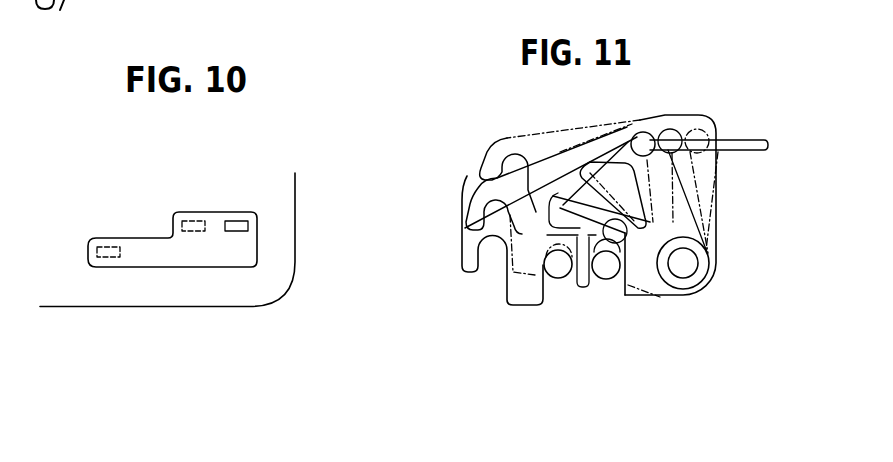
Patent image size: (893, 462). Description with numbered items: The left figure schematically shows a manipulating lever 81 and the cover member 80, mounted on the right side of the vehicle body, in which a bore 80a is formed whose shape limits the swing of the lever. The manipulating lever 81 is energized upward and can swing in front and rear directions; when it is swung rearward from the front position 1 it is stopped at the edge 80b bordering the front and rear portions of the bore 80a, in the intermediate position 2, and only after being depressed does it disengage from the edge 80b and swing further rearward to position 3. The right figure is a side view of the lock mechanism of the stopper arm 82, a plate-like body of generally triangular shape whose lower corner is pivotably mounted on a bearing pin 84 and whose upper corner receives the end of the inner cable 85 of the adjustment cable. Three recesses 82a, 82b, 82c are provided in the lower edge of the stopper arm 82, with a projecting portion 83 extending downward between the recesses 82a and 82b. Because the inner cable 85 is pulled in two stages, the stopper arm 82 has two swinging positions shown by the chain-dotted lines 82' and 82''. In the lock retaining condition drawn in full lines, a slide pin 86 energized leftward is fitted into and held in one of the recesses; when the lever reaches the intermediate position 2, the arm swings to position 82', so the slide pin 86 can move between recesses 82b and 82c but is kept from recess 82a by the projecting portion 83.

In FIG. 10, the front position 1 is at (233, 218).
In FIG. 10, the intermediate position 2 is at (192, 218).
In FIG. 10, the position 3 is at (108, 244).
In FIG. 10, the cover member 80 is at (285, 245).
In FIG. 10, the bore 80a is at (192, 266).
In FIG. 10, the edge 80b is at (182, 250).
In FIG. 10, the manipulating lever 81 is at (257, 222).
In FIG. 11, the stopper arm 82 is at (623, 206).
In FIG. 11, the first swinging position of stopper arm 82' is at (555, 193).
In FIG. 11, the second swinging position of stopper arm 82'' is at (588, 173).
In FIG. 11, the recess 82a is at (490, 272).
In FIG. 11, the recess 82b is at (556, 289).
In FIG. 11, the recess 82c is at (611, 291).
In FIG. 11, the projecting portion 83 is at (525, 306).
In FIG. 11, the bearing pin 84 is at (688, 265).
In FIG. 11, the inner cable 85 is at (742, 140).
In FIG. 11, the slide pin 86 is at (602, 292).